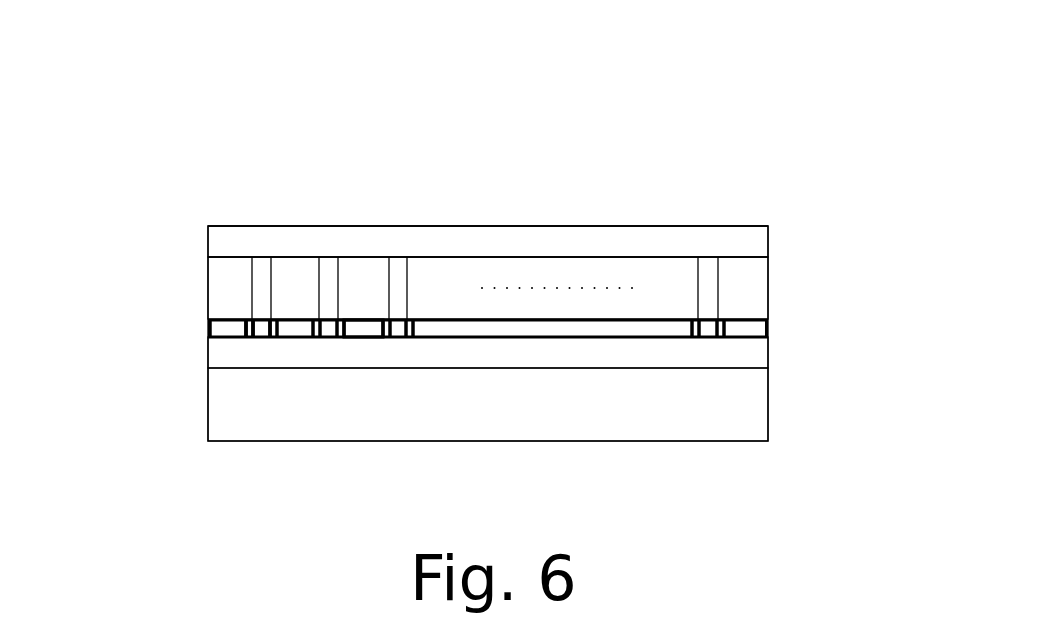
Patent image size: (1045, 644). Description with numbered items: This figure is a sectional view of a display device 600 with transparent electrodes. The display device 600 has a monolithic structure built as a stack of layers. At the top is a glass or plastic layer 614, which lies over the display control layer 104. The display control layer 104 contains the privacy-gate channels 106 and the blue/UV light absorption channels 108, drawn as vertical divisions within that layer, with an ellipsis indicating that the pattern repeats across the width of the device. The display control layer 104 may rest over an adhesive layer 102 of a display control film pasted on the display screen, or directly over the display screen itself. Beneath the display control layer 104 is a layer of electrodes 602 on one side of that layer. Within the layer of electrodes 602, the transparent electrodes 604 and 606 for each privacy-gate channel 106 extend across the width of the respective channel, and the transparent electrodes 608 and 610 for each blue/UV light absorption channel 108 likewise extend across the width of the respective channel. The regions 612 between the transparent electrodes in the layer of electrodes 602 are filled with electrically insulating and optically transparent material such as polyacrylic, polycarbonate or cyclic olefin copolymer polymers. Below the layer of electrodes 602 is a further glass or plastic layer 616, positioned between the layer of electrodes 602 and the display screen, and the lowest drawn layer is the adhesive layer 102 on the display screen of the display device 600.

The display device 600 is at (573, 93).
The glass or plastic layer 614 is at (600, 226).
The display control layer 104 is at (777, 268).
The privacy-gate channel 106 is at (262, 289).
The blue/UV light absorption channel 108 is at (230, 298).
The layer of electrodes 602 is at (770, 320).
The transparent electrode 608 is at (210, 330).
The transparent electrode 610 is at (243, 330).
The transparent electrode 604 is at (250, 337).
The transparent electrode 606 is at (267, 334).
The region between transparent electrodes 612 is at (368, 327).
The glass or plastic layer 616 is at (745, 368).
The adhesive layer 102 is at (537, 415).